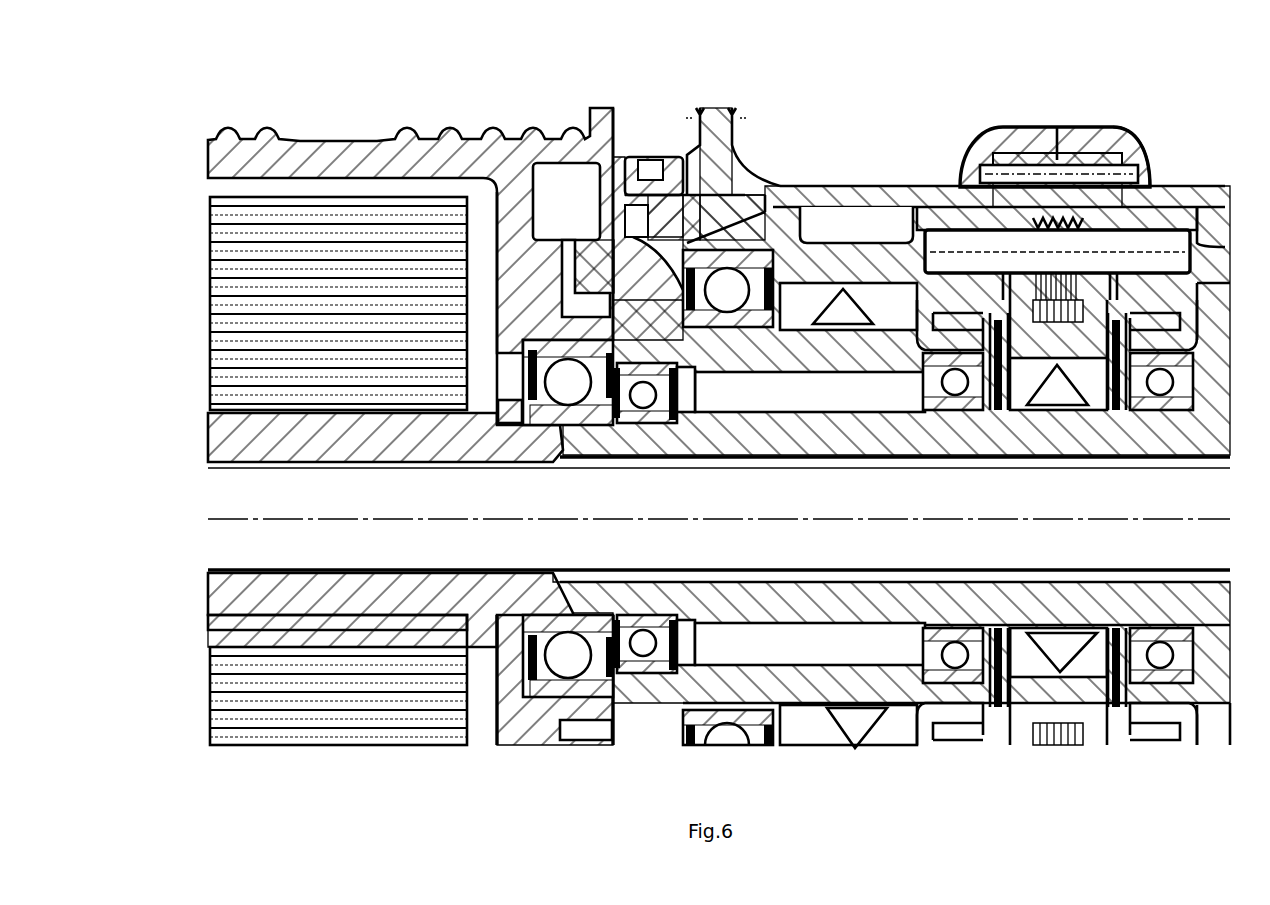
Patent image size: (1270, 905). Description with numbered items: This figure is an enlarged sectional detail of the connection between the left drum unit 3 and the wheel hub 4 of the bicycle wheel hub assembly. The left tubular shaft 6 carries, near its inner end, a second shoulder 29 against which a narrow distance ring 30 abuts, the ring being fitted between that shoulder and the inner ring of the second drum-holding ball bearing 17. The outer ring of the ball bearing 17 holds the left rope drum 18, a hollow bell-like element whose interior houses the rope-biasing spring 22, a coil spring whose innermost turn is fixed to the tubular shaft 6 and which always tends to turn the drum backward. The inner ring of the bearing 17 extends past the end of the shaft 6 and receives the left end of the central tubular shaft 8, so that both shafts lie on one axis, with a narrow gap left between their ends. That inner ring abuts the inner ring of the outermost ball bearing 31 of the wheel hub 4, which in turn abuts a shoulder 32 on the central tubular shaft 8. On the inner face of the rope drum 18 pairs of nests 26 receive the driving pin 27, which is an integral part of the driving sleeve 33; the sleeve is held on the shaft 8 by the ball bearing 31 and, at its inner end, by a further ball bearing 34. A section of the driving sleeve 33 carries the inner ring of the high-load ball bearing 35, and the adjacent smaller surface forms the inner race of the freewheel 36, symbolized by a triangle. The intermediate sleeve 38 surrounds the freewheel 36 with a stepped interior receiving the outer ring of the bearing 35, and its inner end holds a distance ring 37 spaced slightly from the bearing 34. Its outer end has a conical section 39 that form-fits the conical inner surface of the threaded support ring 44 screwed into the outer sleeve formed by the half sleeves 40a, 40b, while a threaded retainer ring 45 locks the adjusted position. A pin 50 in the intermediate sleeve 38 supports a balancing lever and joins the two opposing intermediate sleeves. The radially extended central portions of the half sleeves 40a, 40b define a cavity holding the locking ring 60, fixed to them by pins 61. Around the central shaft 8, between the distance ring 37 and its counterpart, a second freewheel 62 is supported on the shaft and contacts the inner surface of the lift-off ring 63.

The left drum unit 3 is at (366, 758).
The wheel hub 4 is at (894, 766).
The left tubular shaft 6 is at (275, 428).
The central tubular shaft 8 is at (753, 343).
The second drum-holding ball bearing 17 is at (600, 415).
The left rope drum 18 is at (236, 162).
The rope-biasing spring 22 is at (194, 285).
The nests 26 is at (568, 256).
The driving pin 27 is at (590, 256).
The second shoulder 29 is at (490, 428).
The distance ring 30 is at (510, 415).
The outermost ball bearing 31 is at (660, 413).
The shoulder 32 is at (680, 427).
The driving sleeve 33 is at (762, 442).
The ball bearing 34 is at (938, 400).
The ball bearing 35 is at (741, 262).
The freewheel 36 is at (850, 312).
The distance ring 37 is at (1000, 395).
The intermediate sleeve 38 is at (834, 252).
The conical section 39 is at (722, 240).
The half sleeve 40a is at (1002, 128).
The half sleeve 40b is at (1110, 128).
The threaded support ring 44 is at (700, 205).
The threaded retainer ring 45 is at (640, 165).
The pin 50 is at (1167, 243).
The locking ring 60 is at (1010, 192).
The pins 61 is at (1113, 170).
The second freewheel 62 is at (1043, 393).
The lift-off ring 63 is at (1095, 355).